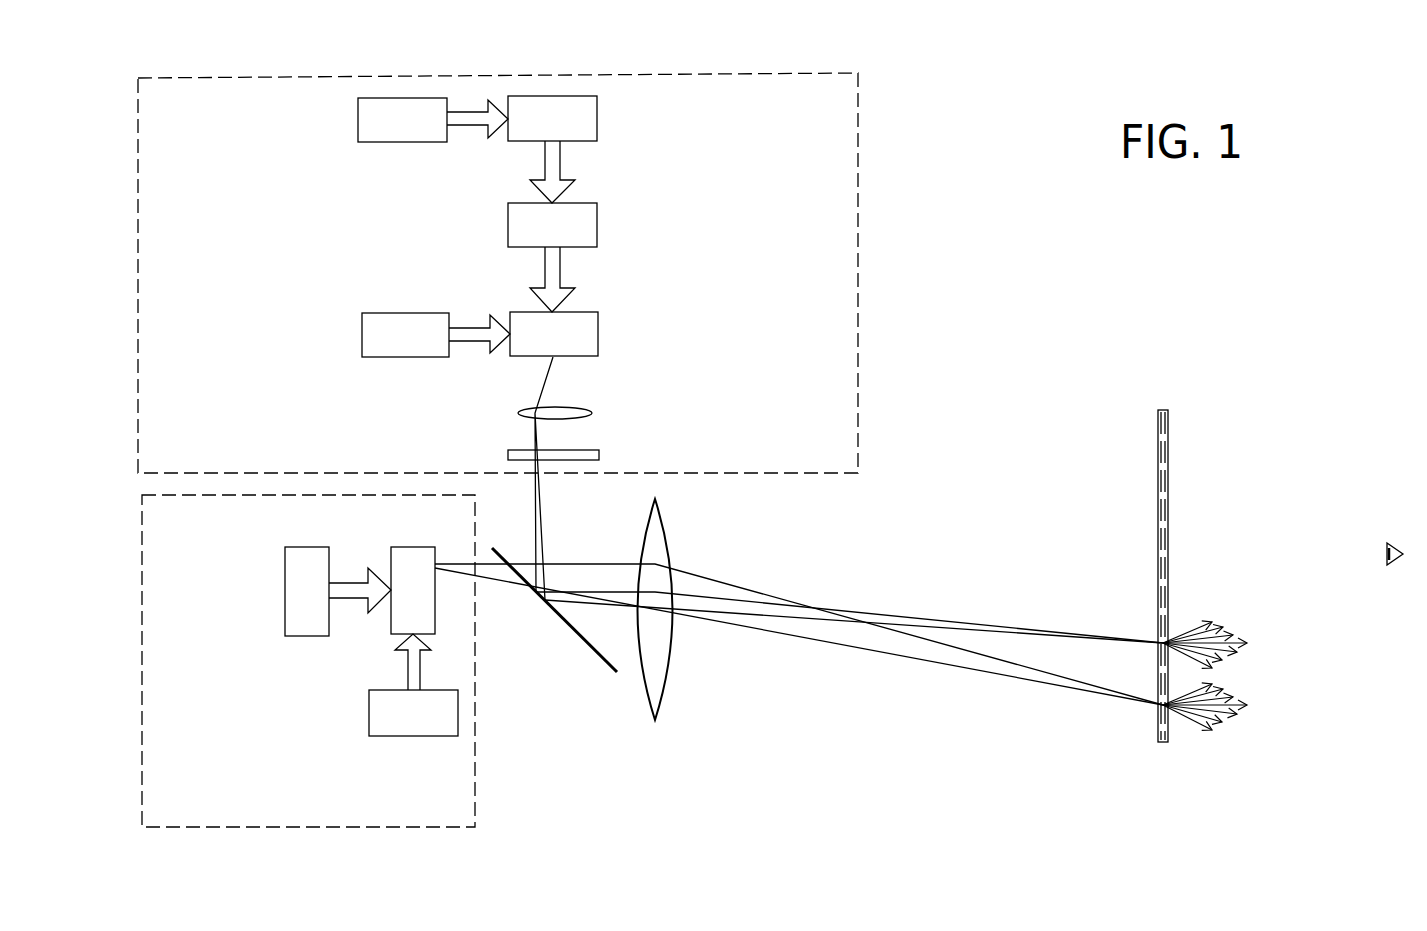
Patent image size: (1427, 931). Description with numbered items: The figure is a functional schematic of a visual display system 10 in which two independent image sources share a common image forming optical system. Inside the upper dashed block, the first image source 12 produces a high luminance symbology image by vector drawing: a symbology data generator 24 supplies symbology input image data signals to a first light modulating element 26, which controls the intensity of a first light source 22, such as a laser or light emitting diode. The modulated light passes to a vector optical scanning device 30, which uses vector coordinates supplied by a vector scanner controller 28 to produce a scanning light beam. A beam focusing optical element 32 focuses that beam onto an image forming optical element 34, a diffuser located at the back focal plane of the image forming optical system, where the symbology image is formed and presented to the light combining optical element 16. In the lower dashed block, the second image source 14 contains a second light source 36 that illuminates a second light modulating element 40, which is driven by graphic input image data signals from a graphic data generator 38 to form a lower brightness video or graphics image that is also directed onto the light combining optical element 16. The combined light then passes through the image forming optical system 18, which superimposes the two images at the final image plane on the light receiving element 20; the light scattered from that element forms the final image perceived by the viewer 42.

The visual display system 10 is at (992, 280).
The first image source 12 is at (860, 190).
The second image source 14 is at (477, 782).
The light combining optical element 16 is at (577, 635).
The image forming optical system 18 is at (662, 683).
The light receiving element 20 is at (1169, 742).
The first light source 22 is at (592, 222).
The symbology data generator 24 is at (407, 132).
The first light modulating element 26 is at (587, 112).
The vector scanner controller 28 is at (407, 325).
The vector optical scanning device 30 is at (585, 333).
The beam focusing optical element 32 is at (518, 413).
The image forming optical element 34 is at (595, 455).
The second light source 36 is at (293, 590).
The graphic data generator 38 is at (415, 725).
The second light modulating element 40 is at (405, 560).
The viewer 42 is at (1395, 562).